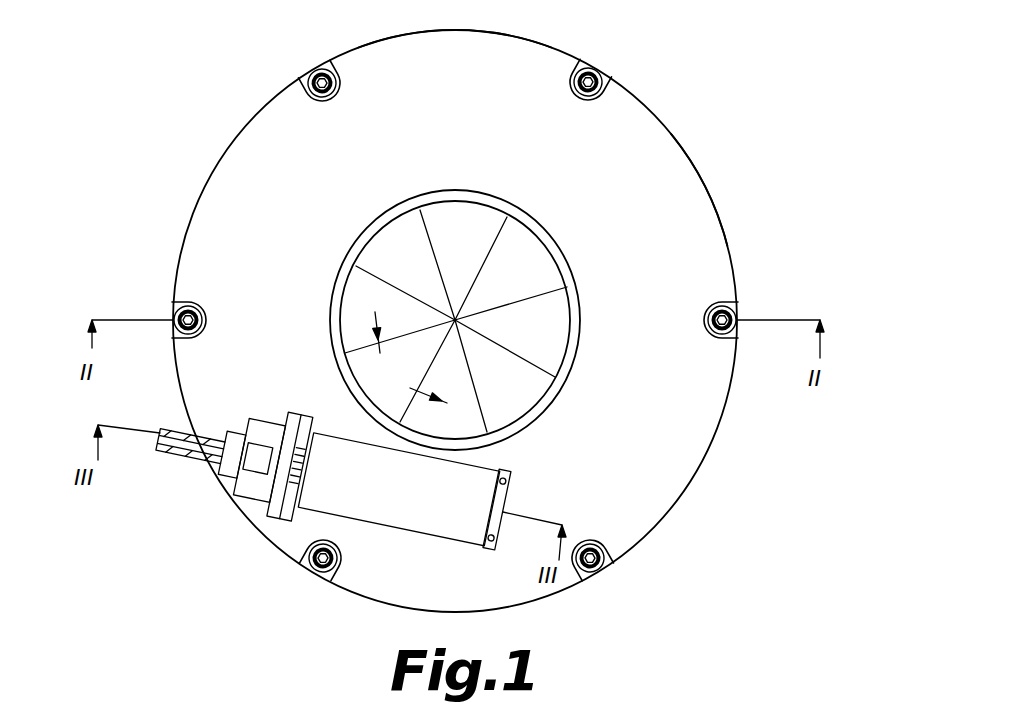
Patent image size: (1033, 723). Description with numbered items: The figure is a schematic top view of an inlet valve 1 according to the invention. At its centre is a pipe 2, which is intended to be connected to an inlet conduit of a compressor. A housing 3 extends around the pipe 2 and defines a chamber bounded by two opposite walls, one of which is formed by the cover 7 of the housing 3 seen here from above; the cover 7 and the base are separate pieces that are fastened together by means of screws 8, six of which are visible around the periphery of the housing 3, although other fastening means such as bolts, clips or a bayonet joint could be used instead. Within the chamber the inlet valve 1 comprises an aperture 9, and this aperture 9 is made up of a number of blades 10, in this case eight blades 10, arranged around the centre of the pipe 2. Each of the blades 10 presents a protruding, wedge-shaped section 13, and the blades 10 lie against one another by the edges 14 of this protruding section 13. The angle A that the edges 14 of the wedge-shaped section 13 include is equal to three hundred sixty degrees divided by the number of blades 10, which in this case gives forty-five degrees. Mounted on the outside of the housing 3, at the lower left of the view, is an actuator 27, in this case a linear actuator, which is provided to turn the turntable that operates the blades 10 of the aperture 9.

The inlet valve 1 is at (136, 73).
The pipe 2 is at (450, 193).
The housing 3 is at (695, 237).
The cover 7 is at (378, 68).
The screws 8 is at (320, 70).
The aperture 9 is at (349, 216).
The blades 10 is at (520, 393).
The protruding section 13 is at (460, 293).
The edges 14 is at (430, 242).
The actuator 27 is at (282, 508).
The angle A is at (410, 357).